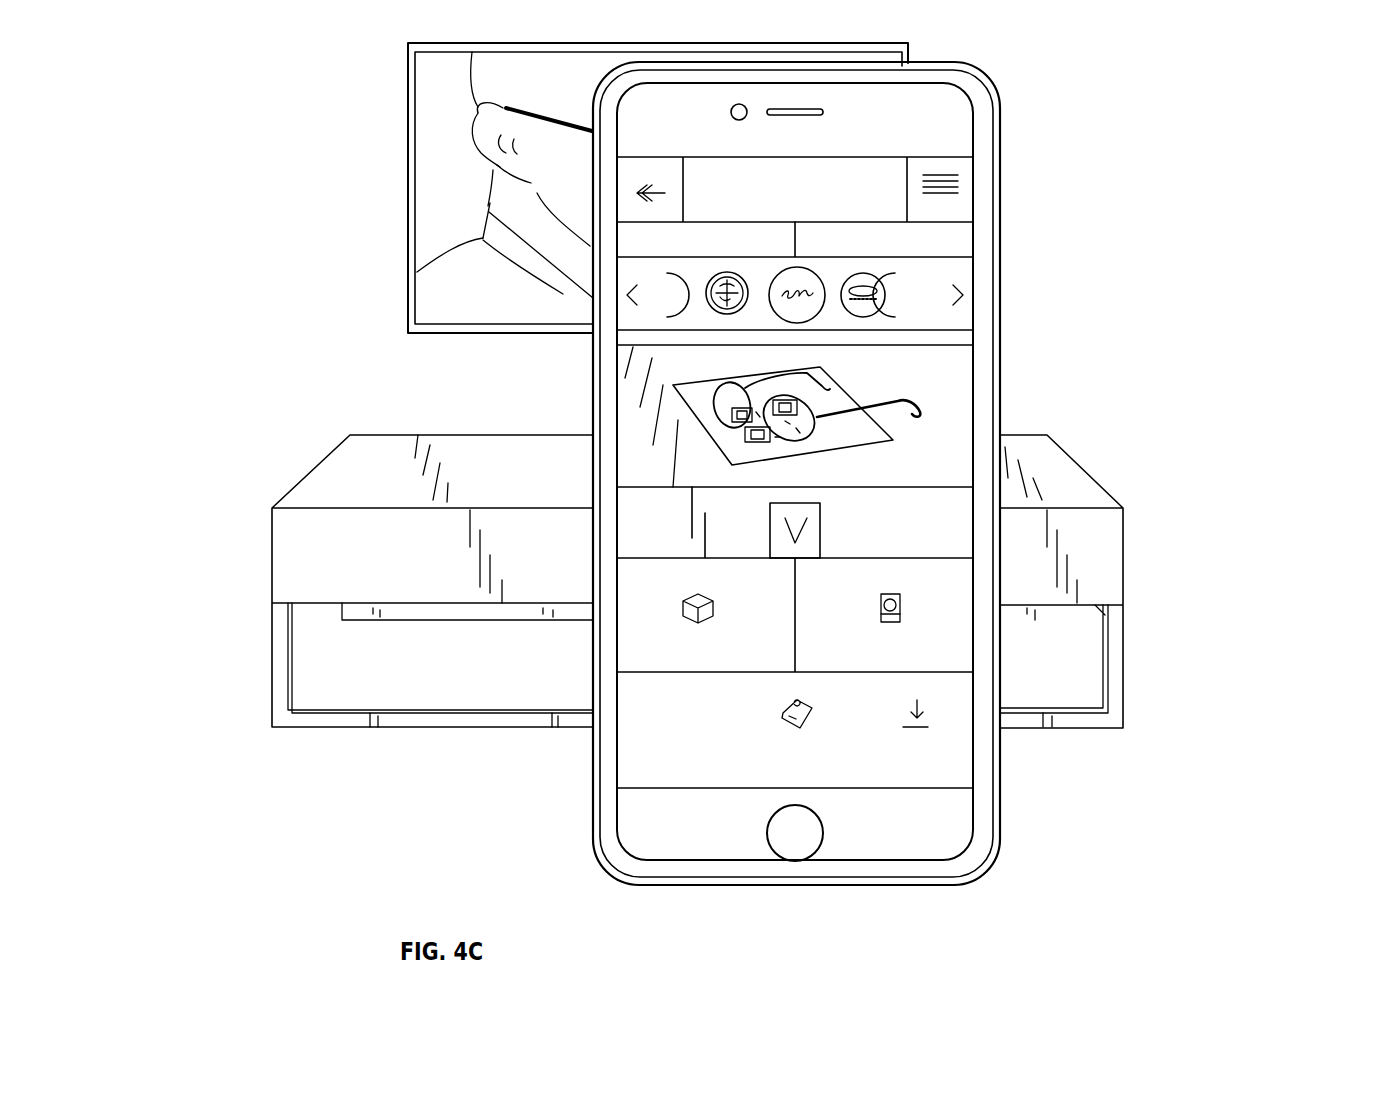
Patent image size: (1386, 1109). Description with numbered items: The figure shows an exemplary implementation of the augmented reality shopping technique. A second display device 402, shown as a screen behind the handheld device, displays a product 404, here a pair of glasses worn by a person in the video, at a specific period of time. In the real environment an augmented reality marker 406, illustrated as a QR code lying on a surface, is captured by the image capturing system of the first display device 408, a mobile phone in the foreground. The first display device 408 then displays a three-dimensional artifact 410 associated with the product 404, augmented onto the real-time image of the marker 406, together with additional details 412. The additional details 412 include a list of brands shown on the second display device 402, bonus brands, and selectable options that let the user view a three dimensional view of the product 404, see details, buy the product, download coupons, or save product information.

The second display device 402 is at (445, 225).
The product 404 is at (592, 118).
The augmented reality marker 406 is at (750, 437).
The first display device 408 is at (990, 388).
The 3D artifact 410 is at (863, 408).
The additional details 412 is at (866, 243).